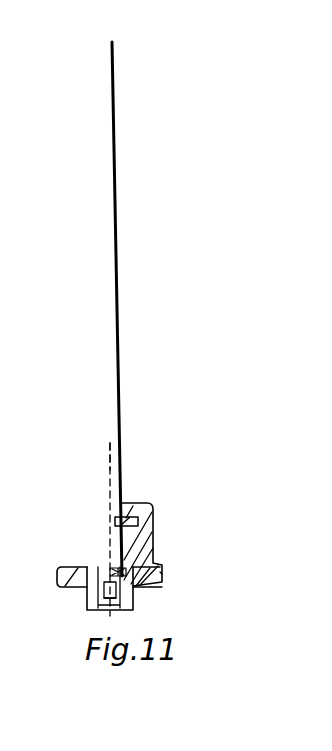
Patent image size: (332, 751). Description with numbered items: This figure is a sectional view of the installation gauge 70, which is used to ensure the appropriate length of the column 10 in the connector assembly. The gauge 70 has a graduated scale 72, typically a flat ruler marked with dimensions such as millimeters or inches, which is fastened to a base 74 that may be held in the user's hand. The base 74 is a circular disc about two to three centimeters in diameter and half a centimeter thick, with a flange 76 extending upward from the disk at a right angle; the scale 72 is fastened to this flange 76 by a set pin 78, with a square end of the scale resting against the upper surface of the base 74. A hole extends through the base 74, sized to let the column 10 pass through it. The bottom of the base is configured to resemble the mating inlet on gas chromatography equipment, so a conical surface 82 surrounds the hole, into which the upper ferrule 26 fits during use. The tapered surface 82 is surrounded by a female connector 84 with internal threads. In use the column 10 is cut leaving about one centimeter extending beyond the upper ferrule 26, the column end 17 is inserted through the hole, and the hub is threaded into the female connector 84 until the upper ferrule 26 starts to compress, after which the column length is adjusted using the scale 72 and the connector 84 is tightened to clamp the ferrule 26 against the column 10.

The column 10 is at (108, 456).
The column end 17 is at (108, 446).
The upper ferrule 26 is at (102, 607).
The installation gauge 70 is at (146, 388).
The graduated scale 72 is at (113, 137).
The base 74 is at (162, 573).
The flange 76 is at (146, 504).
The set pin 78 is at (114, 521).
The conical surface 82 is at (117, 567).
The female connector 84 is at (135, 600).